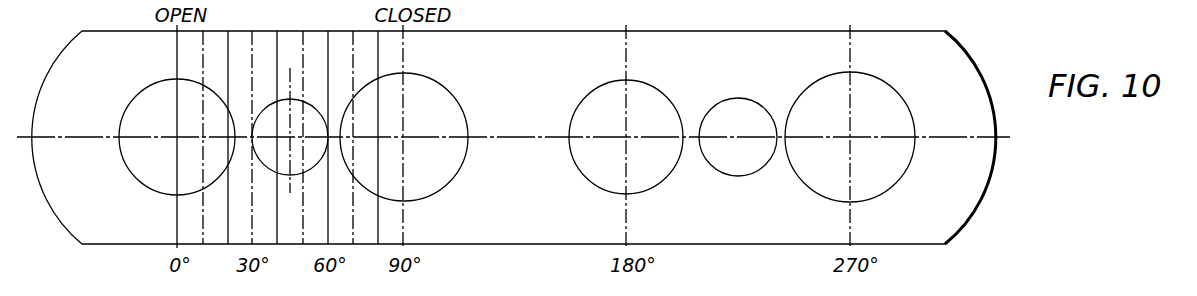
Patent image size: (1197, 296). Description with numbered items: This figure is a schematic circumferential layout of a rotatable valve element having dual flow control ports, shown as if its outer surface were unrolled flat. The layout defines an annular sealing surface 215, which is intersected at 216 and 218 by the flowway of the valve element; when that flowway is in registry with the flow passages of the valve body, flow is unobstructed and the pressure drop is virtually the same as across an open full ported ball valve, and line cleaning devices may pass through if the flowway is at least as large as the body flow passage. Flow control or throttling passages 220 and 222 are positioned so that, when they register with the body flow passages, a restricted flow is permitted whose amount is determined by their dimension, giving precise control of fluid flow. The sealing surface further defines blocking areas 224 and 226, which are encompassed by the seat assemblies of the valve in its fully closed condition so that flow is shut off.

The annular sealing surface 215 is at (502, 48).
The flowway intersection 216 is at (138, 105).
The flowway intersection 218 is at (590, 107).
The flow control passage 220 is at (300, 107).
The flow control passage 222 is at (738, 107).
The blocking area 224 is at (447, 178).
The blocking area 226 is at (887, 176).